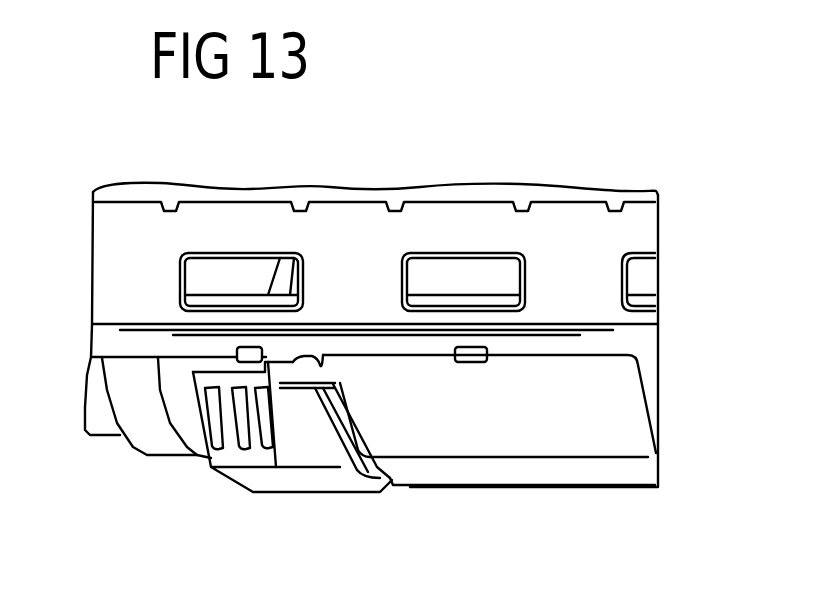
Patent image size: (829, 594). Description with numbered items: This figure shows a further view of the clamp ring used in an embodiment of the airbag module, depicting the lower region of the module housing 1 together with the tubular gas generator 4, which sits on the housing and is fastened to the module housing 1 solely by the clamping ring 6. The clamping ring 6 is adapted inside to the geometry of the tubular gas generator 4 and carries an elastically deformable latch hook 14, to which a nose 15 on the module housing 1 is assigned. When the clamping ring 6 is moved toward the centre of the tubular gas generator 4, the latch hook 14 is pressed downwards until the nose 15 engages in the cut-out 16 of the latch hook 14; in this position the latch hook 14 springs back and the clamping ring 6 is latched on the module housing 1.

The module housing 1 is at (645, 222).
The tubular gas generator 4 is at (137, 427).
The clamping ring 6 is at (288, 460).
The latch hook 14 is at (340, 383).
The nose 15 is at (302, 368).
The cut-out 16 is at (333, 470).